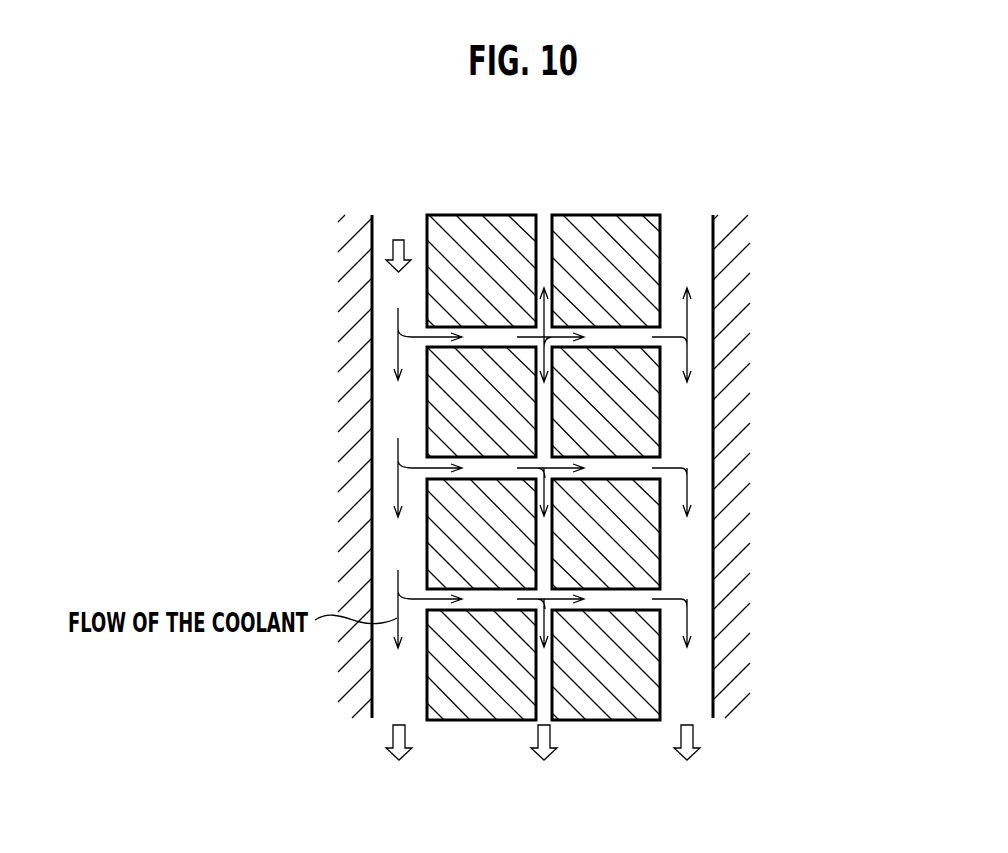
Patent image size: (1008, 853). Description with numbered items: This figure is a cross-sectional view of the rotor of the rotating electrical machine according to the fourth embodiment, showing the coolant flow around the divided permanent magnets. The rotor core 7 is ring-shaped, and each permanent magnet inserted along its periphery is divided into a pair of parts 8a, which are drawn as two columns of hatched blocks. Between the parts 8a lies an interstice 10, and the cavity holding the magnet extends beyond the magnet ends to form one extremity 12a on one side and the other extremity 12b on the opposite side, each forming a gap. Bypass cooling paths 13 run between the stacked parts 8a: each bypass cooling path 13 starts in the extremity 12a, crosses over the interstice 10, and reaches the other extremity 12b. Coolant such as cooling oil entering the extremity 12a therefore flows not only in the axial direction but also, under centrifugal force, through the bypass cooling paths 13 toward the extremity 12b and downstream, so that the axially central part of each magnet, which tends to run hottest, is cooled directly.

The rotor core 7 is at (740, 258).
The parts of the permanent magnet 8a is at (442, 405).
The interstice 10 is at (547, 445).
The extremity of the cavity 12a is at (395, 292).
The other extremity of the cavity 12b is at (698, 338).
The bypass cooling path 13 is at (483, 337).